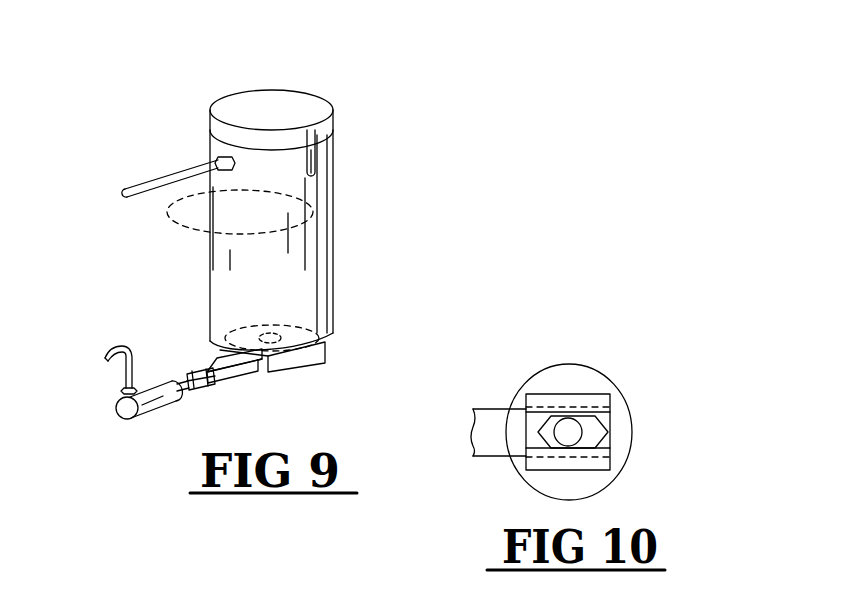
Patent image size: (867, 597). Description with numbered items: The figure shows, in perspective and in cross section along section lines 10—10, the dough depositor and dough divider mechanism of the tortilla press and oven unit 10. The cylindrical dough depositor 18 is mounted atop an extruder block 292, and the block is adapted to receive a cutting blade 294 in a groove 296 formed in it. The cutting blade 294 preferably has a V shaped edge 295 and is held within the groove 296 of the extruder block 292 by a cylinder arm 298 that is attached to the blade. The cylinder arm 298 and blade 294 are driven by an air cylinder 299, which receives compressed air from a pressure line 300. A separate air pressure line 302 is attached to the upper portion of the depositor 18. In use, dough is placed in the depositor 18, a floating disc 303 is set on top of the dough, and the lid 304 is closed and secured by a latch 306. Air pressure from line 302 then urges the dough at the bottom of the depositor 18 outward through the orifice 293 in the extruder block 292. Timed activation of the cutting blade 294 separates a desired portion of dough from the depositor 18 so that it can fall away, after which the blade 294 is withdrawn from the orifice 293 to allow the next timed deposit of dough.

In FIG. 9, the tortilla press and oven unit 10 is at (172, 342).
In FIG. 9, the cylindrical dough depositor 18 is at (333, 213).
In FIG. 10, the cylindrical dough depositor 18 is at (585, 364).
In FIG. 9, the extruder block 292 is at (300, 363).
In FIG. 10, the extruder block 292 is at (547, 393).
In FIG. 9, the orifice 293 is at (270, 330).
In FIG. 10, the orifice 293 is at (582, 430).
In FIG. 9, the cutting blade 294 is at (235, 380).
In FIG. 10, the cutting blade 294 is at (487, 427).
In FIG. 10, the V shaped edge 295 is at (537, 438).
In FIG. 9, the groove 296 is at (250, 374).
In FIG. 10, the groove 296 is at (610, 413).
In FIG. 9, the cylinder arm 298 is at (177, 383).
In FIG. 9, the air cylinder 299 is at (147, 413).
In FIG. 9, the pressure line 300 is at (110, 348).
In FIG. 9, the air pressure line 302 is at (145, 183).
In FIG. 9, the floating disc 303 is at (227, 212).
In FIG. 9, the lid 304 is at (305, 97).
In FIG. 9, the latch 306 is at (316, 167).